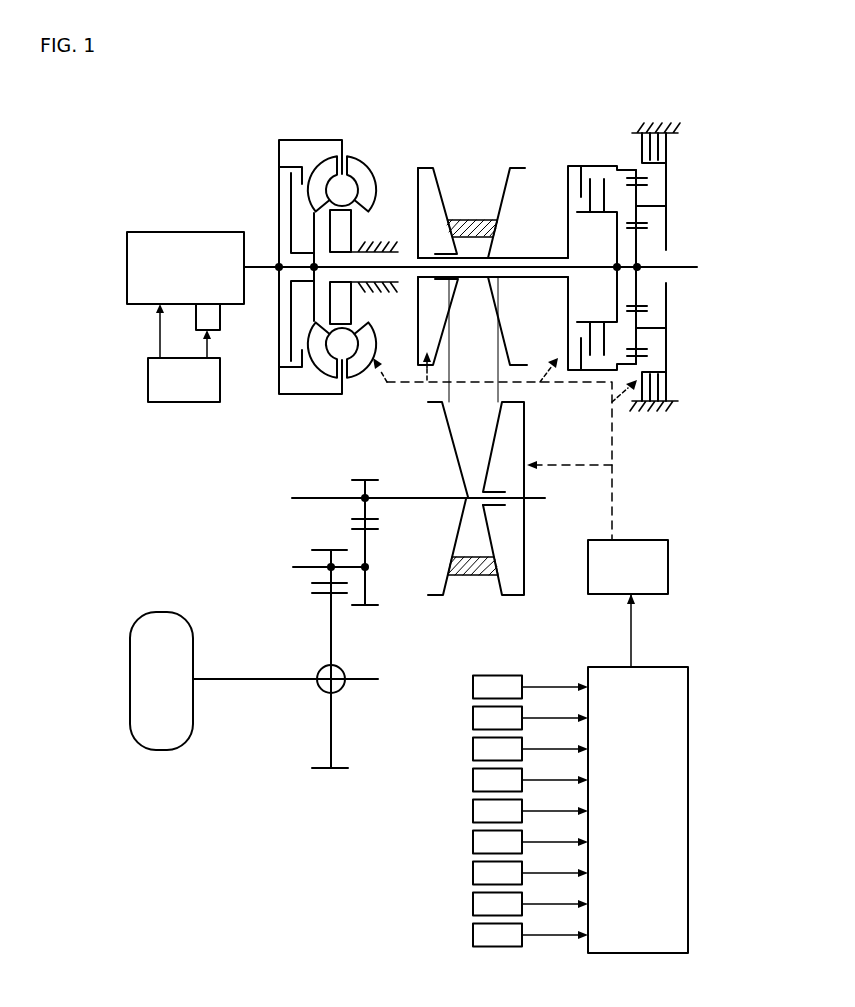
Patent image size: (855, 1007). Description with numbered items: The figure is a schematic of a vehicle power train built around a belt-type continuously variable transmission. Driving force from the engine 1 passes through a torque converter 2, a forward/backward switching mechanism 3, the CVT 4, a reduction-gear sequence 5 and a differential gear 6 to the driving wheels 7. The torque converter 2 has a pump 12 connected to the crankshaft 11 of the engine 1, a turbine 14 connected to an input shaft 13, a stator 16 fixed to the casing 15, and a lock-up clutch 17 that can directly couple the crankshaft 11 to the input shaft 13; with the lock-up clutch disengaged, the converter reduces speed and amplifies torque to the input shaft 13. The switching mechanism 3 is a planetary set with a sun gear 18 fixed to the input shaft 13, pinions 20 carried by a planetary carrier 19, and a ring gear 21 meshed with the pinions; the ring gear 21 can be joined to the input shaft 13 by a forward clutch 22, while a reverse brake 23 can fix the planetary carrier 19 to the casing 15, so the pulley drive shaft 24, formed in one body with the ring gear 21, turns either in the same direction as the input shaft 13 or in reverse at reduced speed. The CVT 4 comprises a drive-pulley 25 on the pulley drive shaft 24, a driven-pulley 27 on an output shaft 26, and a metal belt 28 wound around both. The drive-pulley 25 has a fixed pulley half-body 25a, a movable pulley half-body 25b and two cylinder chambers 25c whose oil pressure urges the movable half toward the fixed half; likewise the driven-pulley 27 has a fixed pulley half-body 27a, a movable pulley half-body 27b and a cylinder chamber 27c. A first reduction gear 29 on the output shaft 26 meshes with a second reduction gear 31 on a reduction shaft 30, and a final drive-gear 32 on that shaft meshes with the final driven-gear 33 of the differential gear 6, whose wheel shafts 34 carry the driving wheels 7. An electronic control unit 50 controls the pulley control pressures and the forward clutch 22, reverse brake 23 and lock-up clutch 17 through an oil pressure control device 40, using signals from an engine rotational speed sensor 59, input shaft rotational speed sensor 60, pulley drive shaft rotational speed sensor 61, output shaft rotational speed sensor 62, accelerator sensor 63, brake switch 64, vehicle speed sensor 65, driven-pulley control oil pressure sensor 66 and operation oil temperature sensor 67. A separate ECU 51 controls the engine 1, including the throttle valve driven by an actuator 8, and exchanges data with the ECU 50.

The engine 1 is at (140, 229).
The torque converter 2 is at (310, 235).
The forward/backward switching mechanism 3 is at (638, 241).
The belt-type continuously variable transmission 4 is at (486, 215).
The reduction-gear sequence 5 is at (382, 558).
The differential gear 6 is at (342, 665).
The driving wheels 7 is at (164, 611).
The actuator 8 is at (220, 318).
The crankshaft 11 is at (255, 263).
The pump 12 is at (357, 158).
The input shaft 13 is at (407, 276).
The turbine 14 is at (325, 160).
The casing 15 is at (378, 238).
The stator 16 is at (345, 208).
The lock-up clutch 17 is at (278, 148).
The sun gear 18 is at (641, 230).
The planetary carrier 19 is at (667, 214).
The pinions 20 is at (640, 198).
The ring gear 21 is at (645, 178).
The forward clutch 22 is at (590, 165).
The reverse brake 23 is at (660, 148).
The pulley drive shaft 24 is at (534, 256).
The drive-pulley 25 is at (472, 237).
The fixed pulley half-body 25a is at (506, 252).
The movable pulley half-body 25b is at (443, 180).
The cylinder chambers 25c is at (421, 165).
The output shaft 26 is at (320, 498).
The driven-pulley 27 is at (512, 534).
The fixed pulley half-body 27a is at (448, 595).
The movable pulley half-body 27b is at (500, 595).
The cylinder chamber 27c is at (526, 428).
The metal belt 28 is at (448, 399).
The first reduction gear 29 is at (377, 477).
The reduction shaft 30 is at (300, 567).
The second reduction gear 31 is at (378, 529).
The final drive-gear 32 is at (335, 550).
The final driven-gear 33 is at (320, 593).
The wheel shafts 34 is at (248, 684).
The oil pressure control device 40 is at (669, 555).
The electronic control unit 50 is at (689, 798).
The ECU for engine control 51 is at (148, 370).
The engine rotational speed sensor 59 is at (473, 683).
The input shaft rotational speed sensor 60 is at (473, 714).
The pulley drive shaft rotational speed sensor 61 is at (473, 745).
The output shaft rotational speed sensor 62 is at (473, 776).
The accelerator sensor 63 is at (473, 807).
The brake switch 64 is at (473, 838).
The vehicle speed sensor 65 is at (473, 869).
The driven-pulley control oil pressure sensor 66 is at (473, 900).
The operation oil temperature sensor 67 is at (473, 931).